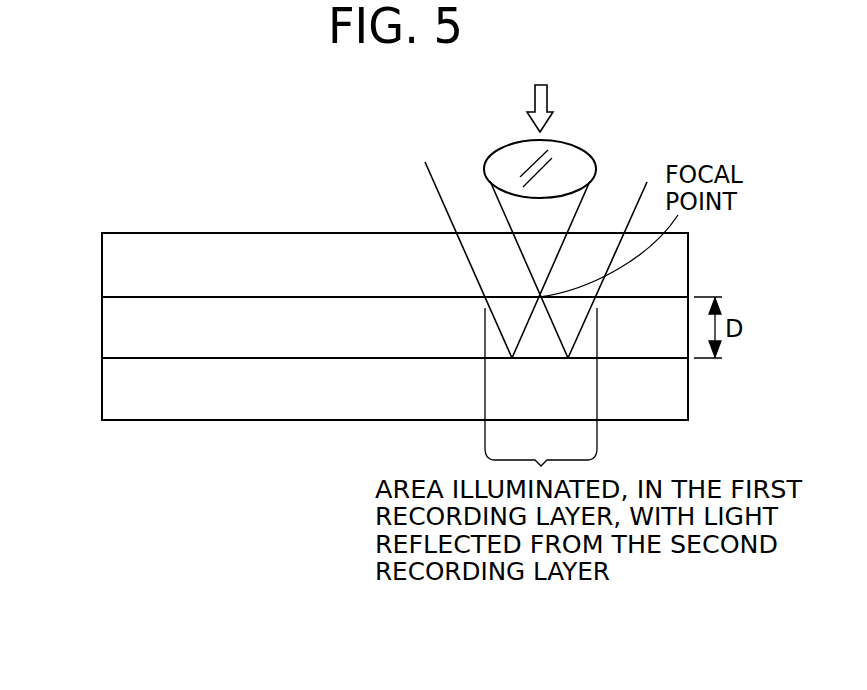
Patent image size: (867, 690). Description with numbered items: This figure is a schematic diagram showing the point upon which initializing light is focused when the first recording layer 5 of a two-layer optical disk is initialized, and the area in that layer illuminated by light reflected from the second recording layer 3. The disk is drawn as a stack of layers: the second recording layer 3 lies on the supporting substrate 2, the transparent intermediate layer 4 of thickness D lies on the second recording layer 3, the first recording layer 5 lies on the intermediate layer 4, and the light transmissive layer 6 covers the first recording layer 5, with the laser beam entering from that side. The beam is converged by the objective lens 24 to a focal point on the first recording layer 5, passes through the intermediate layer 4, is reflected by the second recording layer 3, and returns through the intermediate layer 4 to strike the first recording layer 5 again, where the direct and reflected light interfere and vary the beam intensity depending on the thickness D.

The supporting substrate 2 is at (115, 396).
The second recording layer 3 is at (115, 364).
The intermediate layer 4 is at (115, 331).
The first recording layer 5 is at (115, 297).
The light transmissive layer 6 is at (115, 263).
The objective lens 24 is at (577, 167).